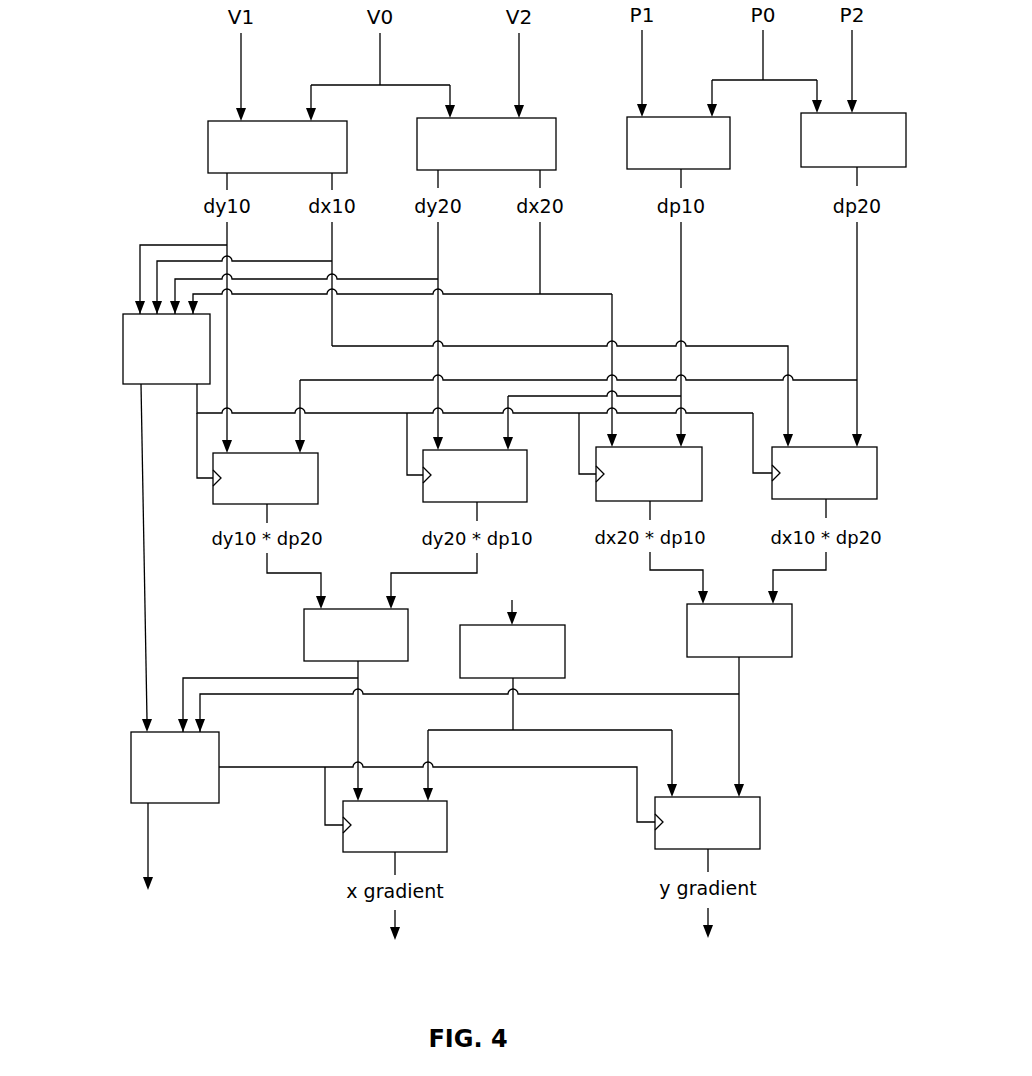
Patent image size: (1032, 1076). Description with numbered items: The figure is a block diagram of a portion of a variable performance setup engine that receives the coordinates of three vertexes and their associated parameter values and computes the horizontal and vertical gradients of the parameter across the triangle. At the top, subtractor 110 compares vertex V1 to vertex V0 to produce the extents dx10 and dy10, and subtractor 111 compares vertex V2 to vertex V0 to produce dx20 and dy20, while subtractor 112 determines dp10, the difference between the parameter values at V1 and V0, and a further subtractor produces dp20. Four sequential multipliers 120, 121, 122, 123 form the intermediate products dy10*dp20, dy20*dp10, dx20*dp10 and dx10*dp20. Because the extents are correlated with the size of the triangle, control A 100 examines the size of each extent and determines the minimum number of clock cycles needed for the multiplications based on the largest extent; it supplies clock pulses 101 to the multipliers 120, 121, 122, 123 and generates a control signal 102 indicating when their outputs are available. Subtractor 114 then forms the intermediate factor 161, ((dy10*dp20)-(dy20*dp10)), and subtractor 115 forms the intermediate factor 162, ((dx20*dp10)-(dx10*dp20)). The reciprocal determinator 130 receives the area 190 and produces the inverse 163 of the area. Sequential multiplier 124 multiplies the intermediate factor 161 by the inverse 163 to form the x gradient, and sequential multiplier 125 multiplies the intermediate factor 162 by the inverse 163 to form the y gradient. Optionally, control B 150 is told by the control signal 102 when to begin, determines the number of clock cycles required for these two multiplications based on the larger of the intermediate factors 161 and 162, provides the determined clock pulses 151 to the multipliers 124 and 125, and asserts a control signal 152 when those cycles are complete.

The control A 100 is at (122, 313).
The clock pulses 101 is at (250, 412).
The control signal 102 is at (143, 537).
The subtractor 110 is at (208, 145).
The subtractor 111 is at (417, 143).
The subtractor 112 is at (627, 140).
The subtractor 114 is at (801, 140).
The subtractor 115 is at (687, 626).
The sequential multiplier 120 is at (318, 497).
The sequential multiplier 121 is at (527, 495).
The sequential multiplier 122 is at (702, 492).
The sequential multiplier 123 is at (877, 492).
The sequential multiplier 124 is at (447, 815).
The sequential multiplier 125 is at (760, 812).
The reciprocal determinator 130 is at (565, 650).
The control B 150 is at (219, 748).
The clock pulses 151 is at (304, 768).
The control signal 152 is at (147, 838).
The intermediate factor 161 is at (356, 728).
The intermediate factor 162 is at (737, 726).
The inverse of the area 163 is at (516, 733).
The area 190 is at (537, 597).